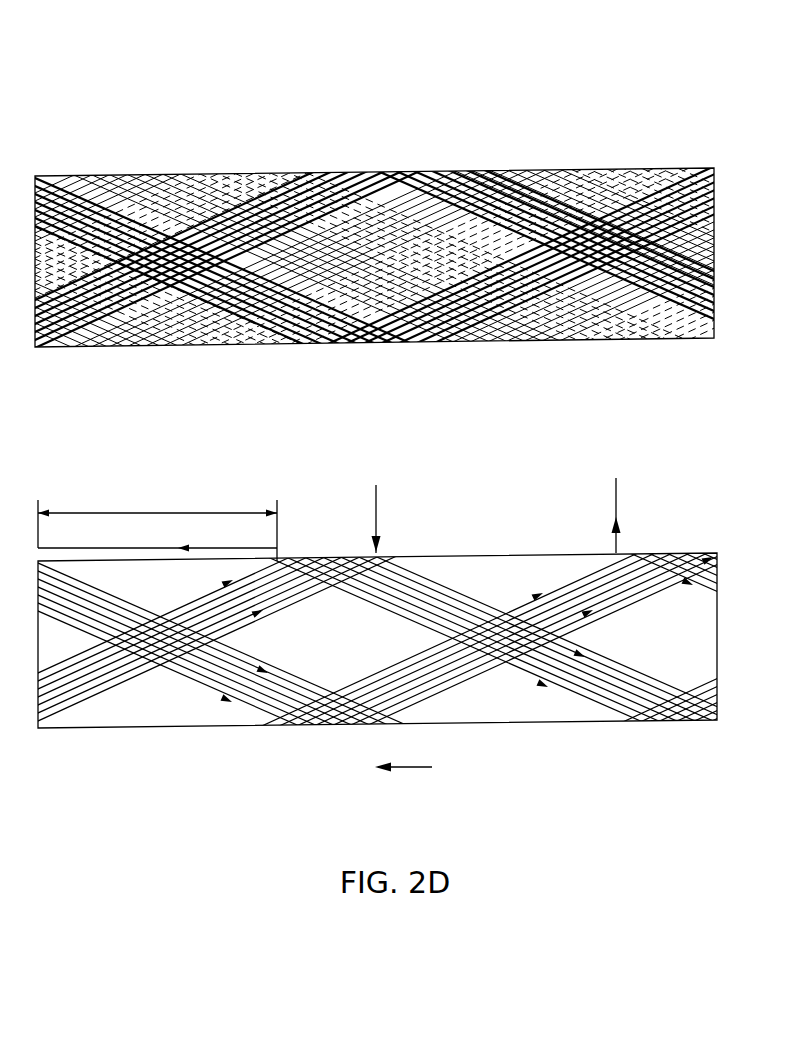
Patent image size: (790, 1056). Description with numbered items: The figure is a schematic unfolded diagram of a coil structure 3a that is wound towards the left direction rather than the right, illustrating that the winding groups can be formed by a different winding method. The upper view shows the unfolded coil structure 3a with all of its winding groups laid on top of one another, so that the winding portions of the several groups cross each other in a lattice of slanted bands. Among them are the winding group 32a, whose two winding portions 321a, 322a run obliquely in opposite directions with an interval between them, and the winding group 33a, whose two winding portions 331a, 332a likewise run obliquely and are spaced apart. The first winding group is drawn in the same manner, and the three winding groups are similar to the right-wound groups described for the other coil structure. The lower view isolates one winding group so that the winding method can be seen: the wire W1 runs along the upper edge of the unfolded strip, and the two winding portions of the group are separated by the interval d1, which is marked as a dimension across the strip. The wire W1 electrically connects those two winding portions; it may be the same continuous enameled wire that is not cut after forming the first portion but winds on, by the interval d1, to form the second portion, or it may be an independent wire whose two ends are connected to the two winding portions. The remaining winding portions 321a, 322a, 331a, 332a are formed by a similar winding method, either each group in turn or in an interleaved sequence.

The coil structure 3a is at (98, 77).
The winding group 32a is at (199, 344).
The winding portion 321a is at (223, 187).
The winding portion 322a is at (548, 185).
The winding group 33a is at (319, 343).
The winding portion 331a is at (115, 187).
The winding portion 332a is at (451, 182).
The interval d1 is at (157, 528).
The wire W1 is at (215, 544).